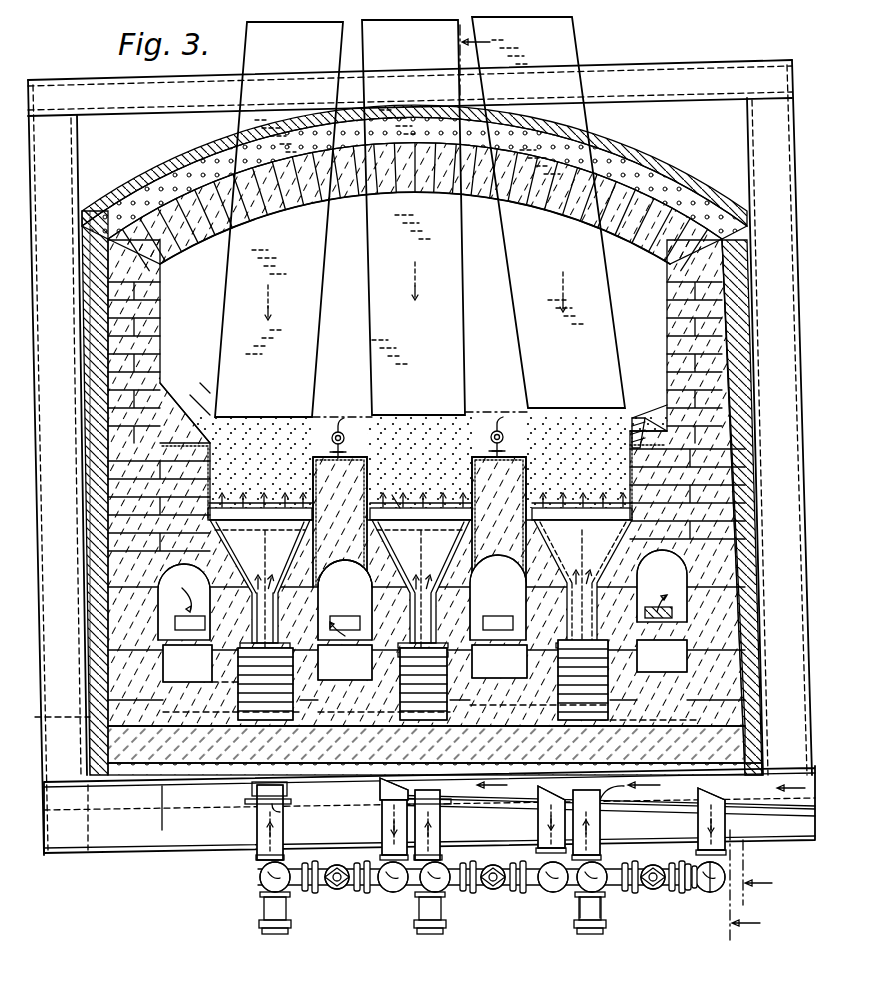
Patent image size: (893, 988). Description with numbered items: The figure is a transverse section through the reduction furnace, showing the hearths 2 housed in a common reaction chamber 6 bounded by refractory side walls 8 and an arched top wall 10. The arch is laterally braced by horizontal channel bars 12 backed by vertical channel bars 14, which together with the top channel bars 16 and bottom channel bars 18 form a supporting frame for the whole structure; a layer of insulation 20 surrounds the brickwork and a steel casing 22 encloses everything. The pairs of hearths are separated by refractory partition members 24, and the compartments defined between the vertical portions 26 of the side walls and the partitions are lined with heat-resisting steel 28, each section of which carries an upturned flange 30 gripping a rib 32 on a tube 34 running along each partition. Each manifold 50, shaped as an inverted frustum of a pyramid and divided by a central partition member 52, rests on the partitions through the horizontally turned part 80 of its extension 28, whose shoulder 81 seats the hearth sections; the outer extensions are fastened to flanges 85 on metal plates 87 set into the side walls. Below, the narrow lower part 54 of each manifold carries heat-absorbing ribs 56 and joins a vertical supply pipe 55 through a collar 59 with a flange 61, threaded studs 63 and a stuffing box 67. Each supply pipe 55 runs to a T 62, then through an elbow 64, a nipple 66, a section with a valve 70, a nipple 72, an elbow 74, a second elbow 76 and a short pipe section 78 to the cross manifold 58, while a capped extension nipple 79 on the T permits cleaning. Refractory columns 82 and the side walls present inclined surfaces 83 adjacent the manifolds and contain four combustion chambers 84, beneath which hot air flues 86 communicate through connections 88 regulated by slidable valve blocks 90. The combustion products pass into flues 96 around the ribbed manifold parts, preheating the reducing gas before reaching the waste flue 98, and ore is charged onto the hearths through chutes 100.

The hearth 2 is at (237, 503).
The reaction chamber 6 is at (638, 272).
The side wall 8 is at (140, 313).
The arched top wall 10 is at (592, 158).
The horizontal channel bar 12 is at (80, 283).
The vertical channel bar 14 is at (420, 457).
The top channel bar 16 is at (615, 78).
The bottom channel bar 18 is at (158, 845).
The layer of insulation 20 is at (80, 430).
The steel casing 22 is at (192, 172).
The partition member 24 is at (315, 490).
The vertical portion of side wall 26 is at (212, 468).
The heat-resisting steel lining 28 is at (372, 460).
The upturned flange 30 is at (335, 440).
The rib 32 is at (470, 452).
The tube 34 is at (342, 432).
The manifold 50 is at (340, 611).
The central partition member 52 is at (595, 556).
The lower manifold part 54 is at (460, 600).
The supply pipe 55 is at (267, 818).
The heat-absorbing rib 56 is at (238, 690).
The cross manifold 58 is at (518, 800).
The collar 59 is at (245, 799).
The flange 61 is at (640, 798).
The T 62 is at (573, 880).
The threaded stud 63 is at (283, 815).
The elbow 64 is at (588, 882).
The nipple 66 is at (634, 882).
The stuffing box 67 is at (290, 789).
The valve 70 is at (658, 884).
The nipple 72 is at (690, 888).
The elbow 74 is at (712, 890).
The second elbow 76 is at (720, 888).
The short pipe section 78 is at (382, 828).
The capped extension nipple 79 is at (593, 910).
The horizontally turned part 80 is at (330, 452).
The shoulder 81 is at (390, 500).
The refractory column 82 is at (305, 590).
The inclined surface 83 is at (318, 548).
The combustion chamber 84 is at (182, 620).
The flange 85 is at (636, 415).
The hot air flue 86 is at (170, 695).
The metal plate 87 is at (652, 415).
The connection 88 is at (422, 662).
The valve block 90 is at (420, 606).
The flue 96 is at (278, 663).
The waste flue 98 is at (66, 717).
The chute 100 is at (237, 275).